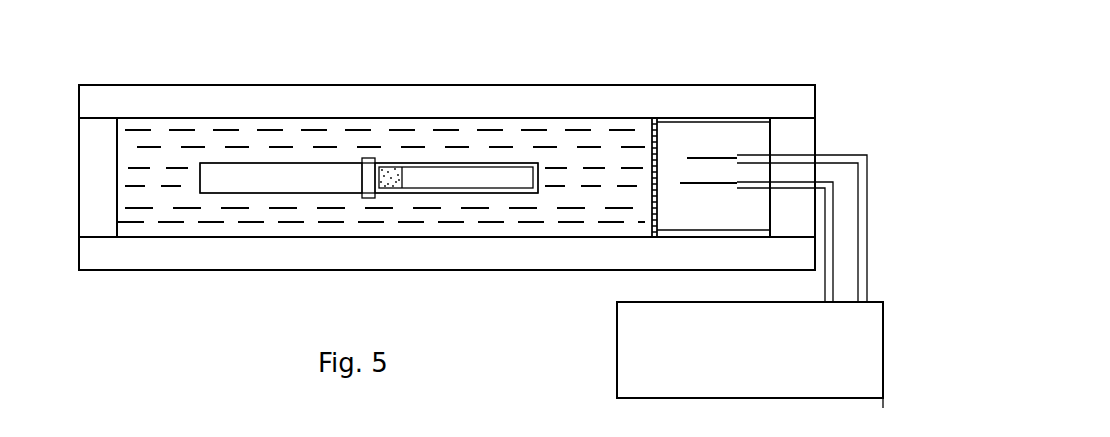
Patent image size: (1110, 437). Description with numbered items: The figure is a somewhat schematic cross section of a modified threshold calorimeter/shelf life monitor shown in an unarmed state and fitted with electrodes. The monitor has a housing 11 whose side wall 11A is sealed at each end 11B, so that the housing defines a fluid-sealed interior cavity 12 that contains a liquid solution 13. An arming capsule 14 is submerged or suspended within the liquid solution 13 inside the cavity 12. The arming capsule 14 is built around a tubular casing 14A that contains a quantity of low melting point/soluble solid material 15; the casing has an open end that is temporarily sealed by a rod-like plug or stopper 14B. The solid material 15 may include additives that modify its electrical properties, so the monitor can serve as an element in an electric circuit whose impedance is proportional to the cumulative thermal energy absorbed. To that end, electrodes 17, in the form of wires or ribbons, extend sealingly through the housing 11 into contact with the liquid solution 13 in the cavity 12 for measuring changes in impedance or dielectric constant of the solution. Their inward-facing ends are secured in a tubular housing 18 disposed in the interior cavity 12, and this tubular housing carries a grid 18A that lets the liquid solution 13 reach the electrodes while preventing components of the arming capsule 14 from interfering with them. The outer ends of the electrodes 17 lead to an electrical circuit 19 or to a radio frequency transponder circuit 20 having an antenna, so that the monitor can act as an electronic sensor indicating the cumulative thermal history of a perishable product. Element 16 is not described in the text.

The housing 11 is at (178, 273).
The side wall 11A is at (225, 266).
The end 11B is at (87, 225).
The interior cavity 12 is at (196, 140).
The liquid solution 13 is at (290, 145).
The arming capsule 14 is at (436, 149).
The tubular casing 14A is at (483, 193).
The plug or stopper 14B is at (279, 185).
The low melting point/soluble solid material 15 is at (407, 172).
The plug 16 is at (358, 182).
The electrodes 17 is at (686, 182).
The tubular housing 18 is at (683, 238).
The grid 18A is at (648, 183).
The electrical circuit 19 is at (617, 350).
The radio frequency transponder circuit 20 is at (617, 380).